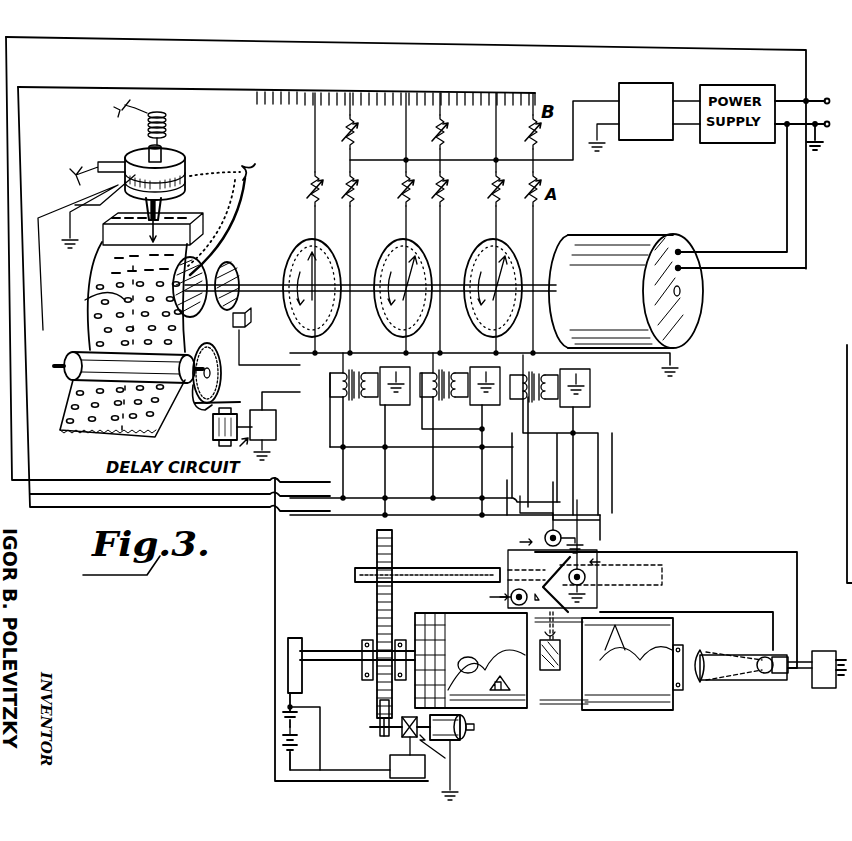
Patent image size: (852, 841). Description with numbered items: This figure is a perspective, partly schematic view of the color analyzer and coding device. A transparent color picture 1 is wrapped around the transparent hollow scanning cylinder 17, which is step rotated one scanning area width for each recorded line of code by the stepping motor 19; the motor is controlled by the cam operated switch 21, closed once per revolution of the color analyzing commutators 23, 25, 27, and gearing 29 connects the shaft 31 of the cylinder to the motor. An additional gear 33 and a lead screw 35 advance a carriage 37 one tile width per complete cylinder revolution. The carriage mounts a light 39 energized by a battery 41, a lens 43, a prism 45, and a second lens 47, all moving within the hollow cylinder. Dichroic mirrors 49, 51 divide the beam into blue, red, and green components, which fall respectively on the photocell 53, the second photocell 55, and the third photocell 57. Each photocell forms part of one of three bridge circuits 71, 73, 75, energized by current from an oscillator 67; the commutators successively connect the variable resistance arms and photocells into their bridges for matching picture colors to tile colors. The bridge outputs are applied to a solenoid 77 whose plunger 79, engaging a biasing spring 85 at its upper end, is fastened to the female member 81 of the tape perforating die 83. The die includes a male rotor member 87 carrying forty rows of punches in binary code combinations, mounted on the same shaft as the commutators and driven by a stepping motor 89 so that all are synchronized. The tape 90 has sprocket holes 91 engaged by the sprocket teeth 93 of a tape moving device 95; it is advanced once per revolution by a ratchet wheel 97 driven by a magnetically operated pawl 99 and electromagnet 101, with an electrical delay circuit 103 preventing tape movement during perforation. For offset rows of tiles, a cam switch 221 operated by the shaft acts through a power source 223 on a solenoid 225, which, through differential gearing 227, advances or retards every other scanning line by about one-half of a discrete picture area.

The transparent color picture 1 is at (640, 715).
The transparent hollow scanning cylinder 17 is at (690, 710).
The stepping motor 19 is at (474, 727).
The cam operated switch 21 is at (262, 302).
The color analyzing commutator 23 is at (300, 318).
The color analyzing commutator 25 is at (385, 325).
The color analyzing commutator 27 is at (476, 332).
The gearing 29 is at (375, 688).
The shaft 31 is at (325, 628).
The additional gear 33 is at (375, 543).
The lead screw 35 is at (450, 566).
The carriage 37 is at (740, 600).
The light 39 is at (758, 680).
The battery 41 is at (840, 655).
The lens 43 is at (705, 640).
The prism 45 is at (560, 680).
The second lens 47 is at (628, 620).
The dichroic mirror 49 is at (515, 608).
The dichroic mirror 51 is at (585, 570).
The photocell 53 is at (562, 528).
The second photocell 55 is at (520, 590).
The third photocell 57 is at (585, 585).
The oscillator 67 is at (655, 140).
The bridge circuit 71 is at (329, 201).
The bridge circuit 73 is at (418, 201).
The bridge circuit 75 is at (504, 201).
The solenoid 77 is at (132, 148).
The plunger 79 is at (168, 148).
The female member 81 is at (112, 232).
The tape perforating die 83 is at (160, 223).
The biasing spring 85 is at (168, 118).
The male rotor member 87 is at (207, 312).
The stepping motor 89 is at (690, 330).
The tape 90 is at (259, 170).
The sprocket holes 91 is at (95, 294).
The sprocket teeth 93 is at (82, 374).
The tape moving device 95 is at (121, 380).
The ratchet wheel 97 is at (205, 405).
The magnetically operated pawl 99 is at (213, 434).
The electromagnet 101 is at (220, 452).
The electrical delay circuit 103 is at (276, 418).
The cam switch 221 is at (283, 714).
The power source 223 is at (283, 745).
The solenoid 225 is at (415, 765).
The differential gearing 227 is at (400, 740).